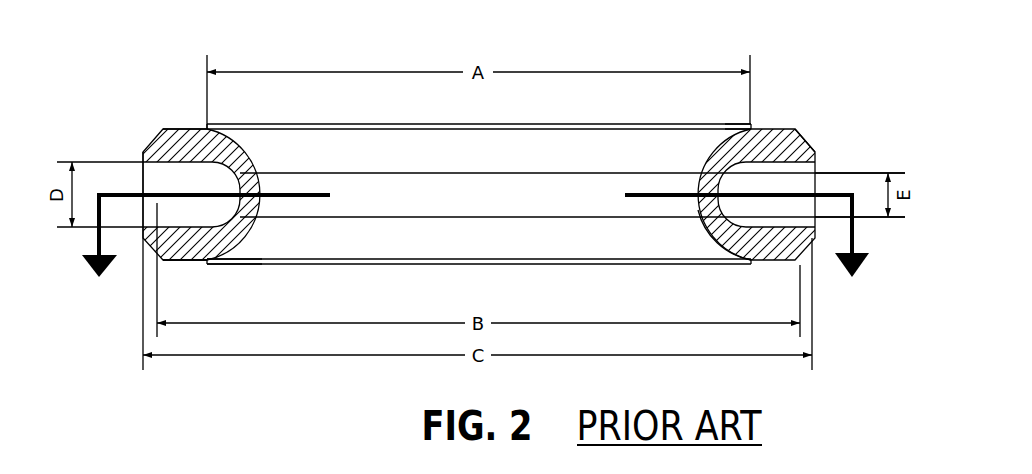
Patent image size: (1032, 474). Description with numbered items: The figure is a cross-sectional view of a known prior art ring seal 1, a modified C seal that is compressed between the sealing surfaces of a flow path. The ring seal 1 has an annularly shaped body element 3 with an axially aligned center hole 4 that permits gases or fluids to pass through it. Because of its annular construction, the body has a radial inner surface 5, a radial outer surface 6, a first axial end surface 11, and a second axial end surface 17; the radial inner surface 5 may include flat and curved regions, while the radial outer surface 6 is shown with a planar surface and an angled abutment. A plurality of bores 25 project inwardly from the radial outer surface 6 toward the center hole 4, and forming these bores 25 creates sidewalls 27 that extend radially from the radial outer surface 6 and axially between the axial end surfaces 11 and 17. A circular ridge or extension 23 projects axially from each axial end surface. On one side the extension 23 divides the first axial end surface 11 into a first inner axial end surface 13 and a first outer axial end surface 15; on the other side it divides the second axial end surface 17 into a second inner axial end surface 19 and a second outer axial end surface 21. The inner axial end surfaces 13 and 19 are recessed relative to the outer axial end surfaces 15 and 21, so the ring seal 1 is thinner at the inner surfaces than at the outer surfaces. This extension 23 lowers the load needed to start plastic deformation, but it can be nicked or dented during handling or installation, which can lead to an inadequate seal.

The ring seal 1 is at (792, 63).
The body element 3 is at (814, 151).
The center hole 4 is at (519, 190).
The radial inner surface 5 is at (694, 231).
The radial outer surface 6 is at (475, 252).
The first axial end surface 11 is at (778, 127).
The first inner axial end surface 13 is at (232, 124).
The first outer axial end surface 15 is at (180, 128).
The second axial end surface 17 is at (772, 264).
The second inner axial end surface 19 is at (228, 266).
The second outer axial end surface 21 is at (175, 263).
The extension 23 is at (205, 127).
The bores 25 is at (139, 186).
The sidewalls 27 is at (820, 174).